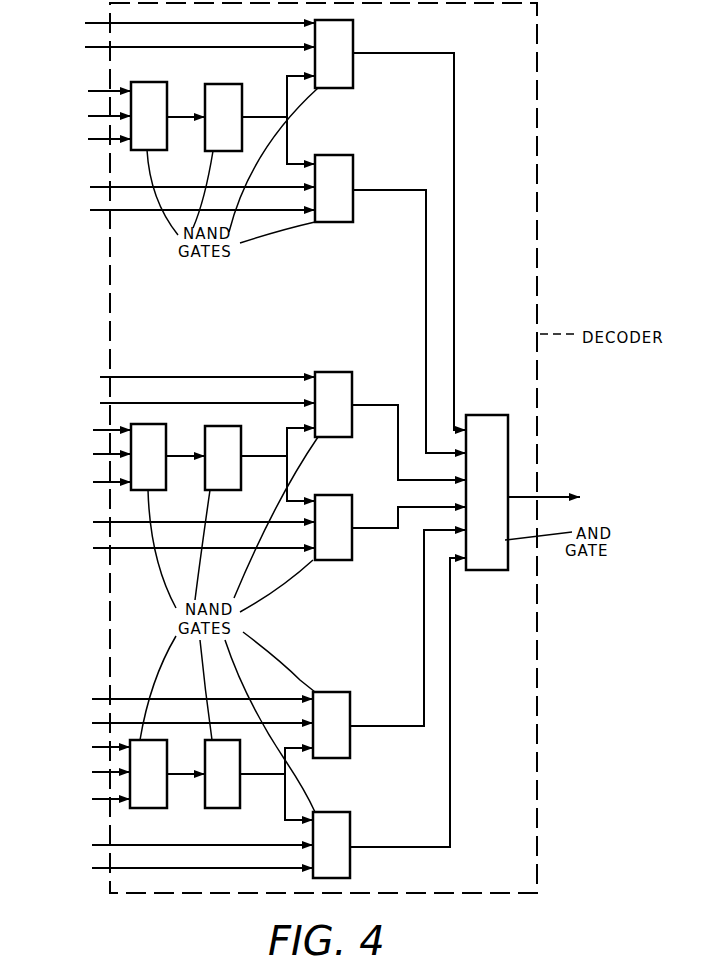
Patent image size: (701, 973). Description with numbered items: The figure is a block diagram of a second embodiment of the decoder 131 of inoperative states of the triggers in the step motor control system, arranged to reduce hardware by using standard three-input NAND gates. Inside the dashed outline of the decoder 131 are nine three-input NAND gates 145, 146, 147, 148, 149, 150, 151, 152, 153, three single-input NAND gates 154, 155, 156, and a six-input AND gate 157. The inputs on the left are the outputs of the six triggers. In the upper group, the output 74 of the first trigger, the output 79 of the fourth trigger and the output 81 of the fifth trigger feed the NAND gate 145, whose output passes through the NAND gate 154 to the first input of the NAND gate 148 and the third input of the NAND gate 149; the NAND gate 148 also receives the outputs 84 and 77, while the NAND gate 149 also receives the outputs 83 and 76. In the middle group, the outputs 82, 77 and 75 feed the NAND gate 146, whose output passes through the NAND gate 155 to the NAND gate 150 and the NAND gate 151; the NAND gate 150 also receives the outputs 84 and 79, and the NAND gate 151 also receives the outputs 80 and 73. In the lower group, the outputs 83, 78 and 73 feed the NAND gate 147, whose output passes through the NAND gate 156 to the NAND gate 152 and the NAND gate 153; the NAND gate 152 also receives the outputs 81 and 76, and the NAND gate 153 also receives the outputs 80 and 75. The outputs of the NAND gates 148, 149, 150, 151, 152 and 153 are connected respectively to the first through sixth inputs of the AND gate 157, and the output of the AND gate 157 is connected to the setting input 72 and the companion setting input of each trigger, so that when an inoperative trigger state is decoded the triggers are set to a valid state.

The decoder of inoperative states of the triggers 131 is at (541, 270).
The setting input 72 is at (556, 497).
The trigger output 84 is at (179, 201).
The trigger output 77 is at (179, 252).
The trigger output 81 is at (178, 396).
The trigger output 79 is at (179, 260).
The trigger output 74 is at (90, 146).
The trigger output 83 is at (182, 469).
The trigger output 76 is at (182, 468).
The trigger output 82 is at (90, 429).
The trigger output 75 is at (184, 675).
The trigger output 80 is at (182, 683).
The trigger output 73 is at (185, 673).
The trigger output 78 is at (93, 772).
The NAND gate 145 is at (168, 116).
The NAND gate 154 is at (260, 120).
The NAND gate 148 is at (390, 225).
The NAND gate 149 is at (390, 304).
The NAND gate 146 is at (168, 457).
The NAND gate 155 is at (260, 463).
The NAND gate 150 is at (390, 426).
The NAND gate 151 is at (390, 527).
The NAND gate 147 is at (167, 774).
The NAND gate 156 is at (259, 780).
The NAND gate 152 is at (389, 644).
The NAND gate 153 is at (389, 718).
The AND gate 157 is at (487, 492).